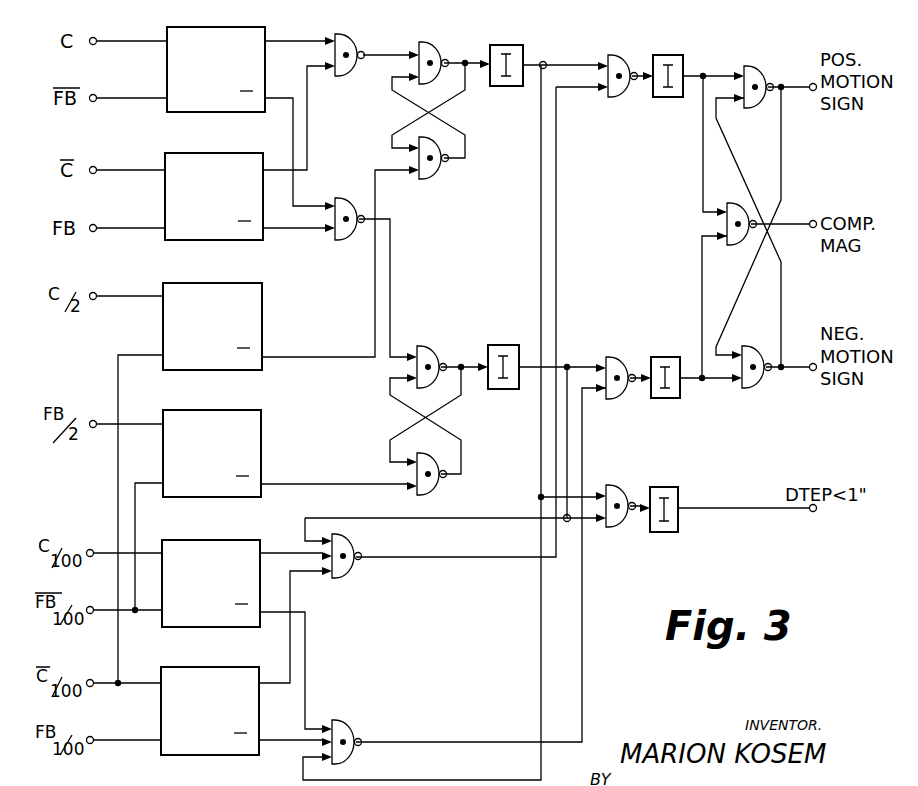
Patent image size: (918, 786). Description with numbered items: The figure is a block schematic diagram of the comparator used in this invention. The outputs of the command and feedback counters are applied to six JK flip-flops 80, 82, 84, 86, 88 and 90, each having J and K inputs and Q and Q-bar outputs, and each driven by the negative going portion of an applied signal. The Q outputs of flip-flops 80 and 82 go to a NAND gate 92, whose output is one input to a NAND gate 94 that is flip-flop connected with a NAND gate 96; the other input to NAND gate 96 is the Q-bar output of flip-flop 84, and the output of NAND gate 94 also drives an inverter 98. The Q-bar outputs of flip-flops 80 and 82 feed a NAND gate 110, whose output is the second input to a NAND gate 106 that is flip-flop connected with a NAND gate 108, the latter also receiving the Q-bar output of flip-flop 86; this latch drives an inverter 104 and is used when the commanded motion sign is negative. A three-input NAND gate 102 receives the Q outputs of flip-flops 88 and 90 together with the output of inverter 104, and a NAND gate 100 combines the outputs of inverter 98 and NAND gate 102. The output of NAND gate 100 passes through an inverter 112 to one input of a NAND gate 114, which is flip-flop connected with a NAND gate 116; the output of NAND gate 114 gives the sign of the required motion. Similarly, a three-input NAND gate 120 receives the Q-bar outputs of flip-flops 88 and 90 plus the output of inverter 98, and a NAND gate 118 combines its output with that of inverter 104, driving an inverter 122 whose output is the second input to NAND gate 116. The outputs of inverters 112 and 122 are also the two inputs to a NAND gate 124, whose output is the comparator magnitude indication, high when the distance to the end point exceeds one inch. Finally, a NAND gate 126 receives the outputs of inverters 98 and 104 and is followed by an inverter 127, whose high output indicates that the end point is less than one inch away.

The flip-flop 80 is at (229, 28).
The flip-flop 82 is at (226, 154).
The flip-flop 84 is at (223, 284).
The flip-flop 86 is at (219, 411).
The flip-flop 88 is at (219, 541).
The flip-flop 90 is at (219, 668).
The NAND gate 92 is at (343, 38).
The NAND gate 94 is at (426, 45).
The NAND gate 96 is at (430, 176).
The inverter 98 is at (509, 45).
The NAND gate 100 is at (620, 44).
The NAND gate 102 is at (350, 541).
The inverter 104 is at (495, 345).
The NAND gate 106 is at (423, 346).
The NAND gate 108 is at (431, 492).
The NAND gate 110 is at (352, 192).
The inverter 112 is at (665, 55).
The NAND gate 114 is at (750, 66).
The NAND gate 116 is at (755, 337).
The NAND gate 118 is at (617, 352).
The NAND gate 120 is at (341, 721).
The inverter 122 is at (665, 357).
The NAND gate 124 is at (735, 195).
The NAND gate 126 is at (620, 475).
The inverter 127 is at (661, 487).